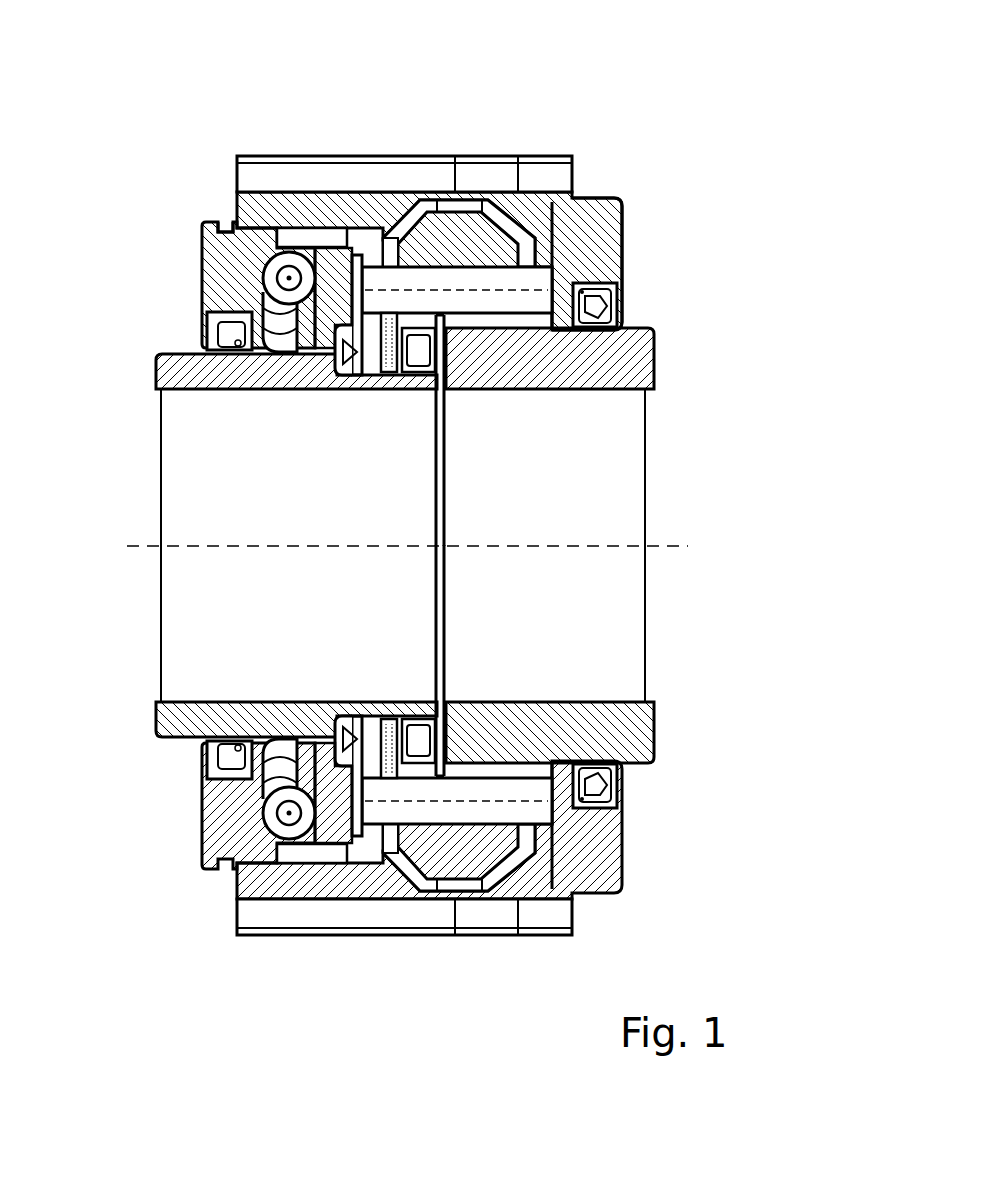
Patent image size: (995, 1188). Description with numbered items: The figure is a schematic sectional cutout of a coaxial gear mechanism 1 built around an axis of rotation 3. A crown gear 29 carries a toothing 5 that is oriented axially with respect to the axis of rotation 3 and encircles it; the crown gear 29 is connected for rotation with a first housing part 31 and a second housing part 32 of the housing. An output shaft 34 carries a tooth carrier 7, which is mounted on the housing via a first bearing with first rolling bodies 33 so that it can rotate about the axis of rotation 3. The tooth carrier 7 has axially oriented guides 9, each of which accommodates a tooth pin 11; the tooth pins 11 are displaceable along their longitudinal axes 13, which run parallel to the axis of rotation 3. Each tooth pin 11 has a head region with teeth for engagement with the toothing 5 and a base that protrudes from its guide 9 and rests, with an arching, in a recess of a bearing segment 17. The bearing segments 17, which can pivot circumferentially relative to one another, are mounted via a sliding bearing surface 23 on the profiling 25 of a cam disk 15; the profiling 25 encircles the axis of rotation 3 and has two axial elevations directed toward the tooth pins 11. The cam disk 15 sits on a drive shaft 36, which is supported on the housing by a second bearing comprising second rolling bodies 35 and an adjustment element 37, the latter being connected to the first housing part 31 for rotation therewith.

The coaxial gear mechanism 1 is at (204, 102).
The axis of rotation 3 is at (680, 548).
The toothing 5 is at (553, 279).
The tooth carrier 7 is at (462, 255).
The guides 9 is at (420, 266).
The tooth pins 11 is at (598, 200).
The longitudinal axes 13 is at (380, 289).
The cam disk 15 is at (334, 808).
The bearing segment 17 is at (245, 224).
The sliding bearing surface 23 is at (353, 808).
The profiling 25 is at (345, 349).
The crown gear 29 is at (588, 243).
The first housing part 31 is at (293, 208).
The second housing part 32 is at (508, 220).
The first rolling bodies 33 is at (405, 225).
The output shaft 34 is at (556, 366).
The second rolling bodies 35 is at (283, 291).
The drive shaft 36 is at (270, 372).
The adjustment element 37 is at (243, 262).